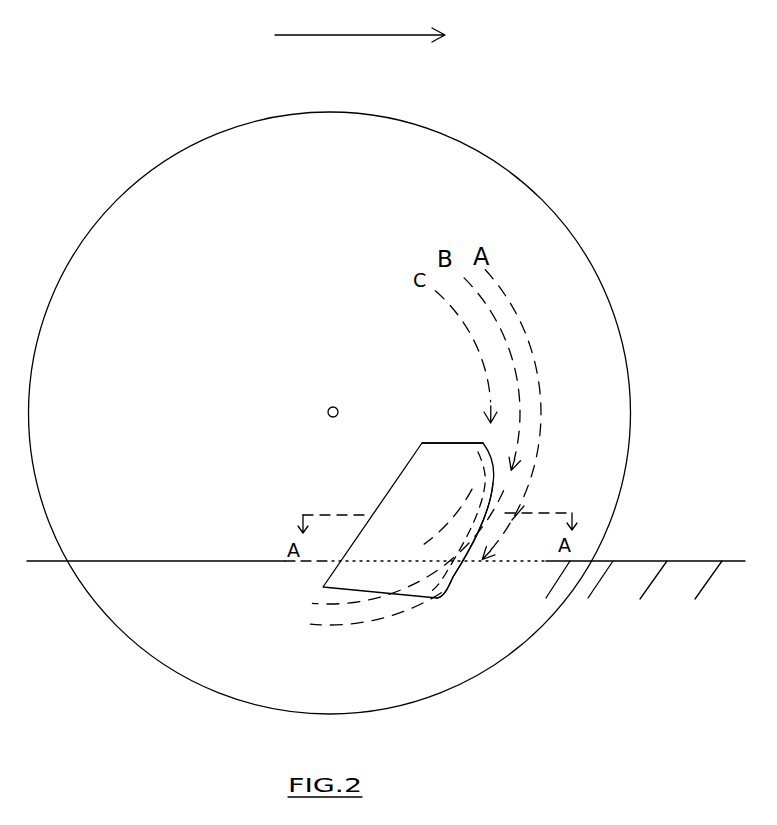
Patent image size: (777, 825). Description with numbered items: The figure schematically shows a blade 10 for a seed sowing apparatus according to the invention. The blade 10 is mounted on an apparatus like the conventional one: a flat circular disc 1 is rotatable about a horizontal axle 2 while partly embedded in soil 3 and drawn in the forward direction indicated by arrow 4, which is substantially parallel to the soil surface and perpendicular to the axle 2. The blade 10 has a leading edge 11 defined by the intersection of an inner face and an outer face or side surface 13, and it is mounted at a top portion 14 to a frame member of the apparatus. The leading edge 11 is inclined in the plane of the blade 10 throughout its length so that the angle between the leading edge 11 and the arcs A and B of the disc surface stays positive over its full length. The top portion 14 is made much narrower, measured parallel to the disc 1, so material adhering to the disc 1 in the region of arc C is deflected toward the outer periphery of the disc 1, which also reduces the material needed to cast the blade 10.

The flat circular disc 1 is at (102, 253).
The horizontal axle 2 is at (328, 410).
The soil 3 is at (658, 633).
The arrow indicating forward direction 4 is at (360, 23).
The blade 10 is at (407, 465).
The leading edge 11 is at (456, 577).
The outer face 13 is at (414, 537).
The top portion 14 is at (452, 442).